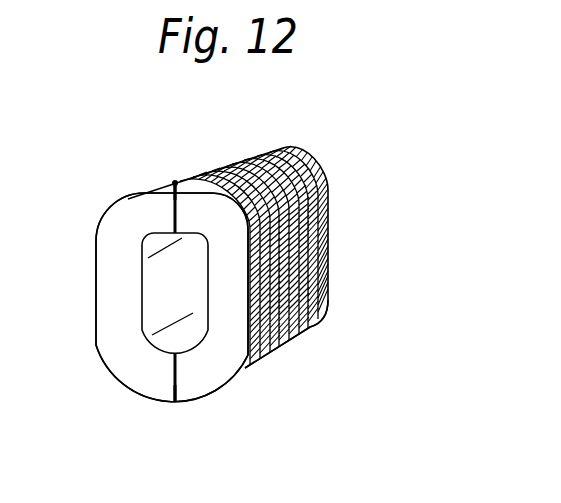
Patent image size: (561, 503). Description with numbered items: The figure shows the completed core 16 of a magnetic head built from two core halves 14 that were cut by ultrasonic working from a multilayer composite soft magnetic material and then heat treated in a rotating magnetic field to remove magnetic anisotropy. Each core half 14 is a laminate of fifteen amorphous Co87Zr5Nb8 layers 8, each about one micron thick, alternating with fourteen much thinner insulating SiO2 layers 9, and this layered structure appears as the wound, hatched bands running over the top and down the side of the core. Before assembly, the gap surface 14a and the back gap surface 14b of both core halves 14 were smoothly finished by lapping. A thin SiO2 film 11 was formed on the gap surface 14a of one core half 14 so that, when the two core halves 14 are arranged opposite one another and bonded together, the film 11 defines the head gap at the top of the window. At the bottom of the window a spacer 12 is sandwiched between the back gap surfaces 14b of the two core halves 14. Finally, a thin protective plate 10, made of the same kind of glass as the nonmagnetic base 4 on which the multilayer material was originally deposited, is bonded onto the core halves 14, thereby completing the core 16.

The nonmagnetic base 4 is at (246, 370).
The Co87Zr5Nb8 layers 8 is at (305, 151).
The SiO2 layers 9 is at (288, 335).
The protective plate 10 is at (304, 166).
The SiO2 film 11 is at (175, 218).
The spacer 12 is at (175, 378).
The core half 14 is at (126, 365).
The gap surface 14a is at (175, 183).
The back gap surface 14b is at (175, 411).
The core of the magnetic head 16 is at (226, 283).